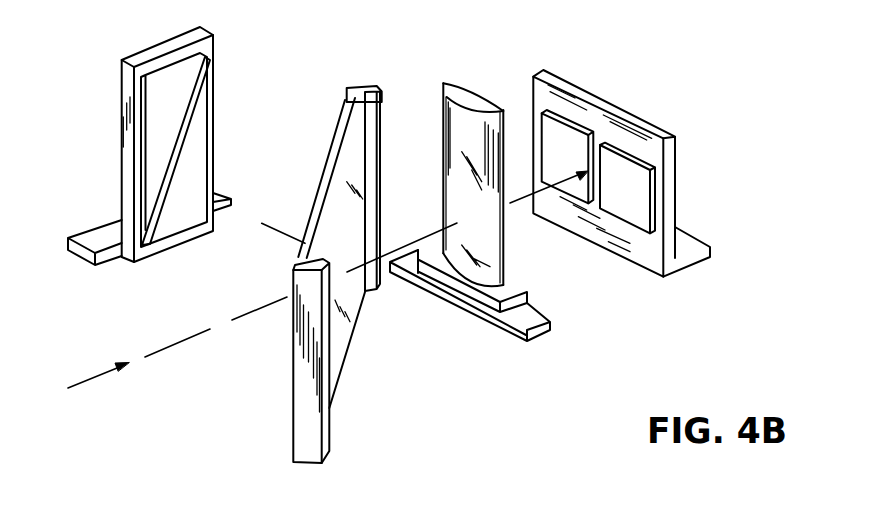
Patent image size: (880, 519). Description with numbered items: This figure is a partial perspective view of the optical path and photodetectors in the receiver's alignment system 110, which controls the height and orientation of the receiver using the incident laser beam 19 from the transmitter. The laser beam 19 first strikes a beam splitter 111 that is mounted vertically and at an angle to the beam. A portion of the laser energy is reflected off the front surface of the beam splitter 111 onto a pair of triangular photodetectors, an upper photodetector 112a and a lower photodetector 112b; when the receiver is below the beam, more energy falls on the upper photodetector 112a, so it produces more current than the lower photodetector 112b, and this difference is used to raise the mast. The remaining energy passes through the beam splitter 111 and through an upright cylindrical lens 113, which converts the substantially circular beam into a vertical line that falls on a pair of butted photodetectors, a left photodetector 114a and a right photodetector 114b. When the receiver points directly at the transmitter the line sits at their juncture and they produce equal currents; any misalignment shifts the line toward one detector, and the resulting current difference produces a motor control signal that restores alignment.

The laser beam 19 is at (92, 378).
The alignment system 110 is at (437, 355).
The beam splitter 111 is at (336, 352).
The upper photodetector 112a is at (163, 87).
The lower photodetector 112b is at (252, 218).
The cylindrical lens 113 is at (486, 216).
The left photodetector 114a is at (555, 145).
The right photodetector 114b is at (632, 185).